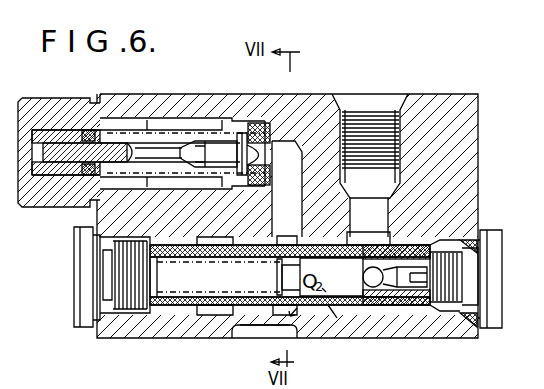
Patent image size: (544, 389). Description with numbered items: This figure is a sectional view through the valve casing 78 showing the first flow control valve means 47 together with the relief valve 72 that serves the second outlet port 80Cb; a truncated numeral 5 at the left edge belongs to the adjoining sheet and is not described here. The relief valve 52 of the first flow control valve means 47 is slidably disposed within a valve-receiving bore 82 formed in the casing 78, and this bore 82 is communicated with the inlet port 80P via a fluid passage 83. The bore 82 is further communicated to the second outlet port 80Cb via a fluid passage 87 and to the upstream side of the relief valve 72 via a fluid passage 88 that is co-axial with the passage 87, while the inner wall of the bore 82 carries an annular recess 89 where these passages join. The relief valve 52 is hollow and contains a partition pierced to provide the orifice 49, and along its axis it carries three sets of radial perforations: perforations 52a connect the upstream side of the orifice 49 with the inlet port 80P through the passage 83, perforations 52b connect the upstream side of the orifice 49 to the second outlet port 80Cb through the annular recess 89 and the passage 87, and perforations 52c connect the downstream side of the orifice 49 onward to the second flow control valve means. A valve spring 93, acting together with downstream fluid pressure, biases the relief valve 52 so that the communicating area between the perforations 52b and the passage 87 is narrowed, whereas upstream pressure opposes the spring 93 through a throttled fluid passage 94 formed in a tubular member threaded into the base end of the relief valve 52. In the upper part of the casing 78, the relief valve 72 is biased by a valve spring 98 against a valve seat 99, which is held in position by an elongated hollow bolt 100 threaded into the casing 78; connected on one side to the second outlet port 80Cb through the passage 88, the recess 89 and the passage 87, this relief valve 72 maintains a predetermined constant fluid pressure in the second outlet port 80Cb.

The valve assembly (partial) 5 is at (5, 66).
The first flow control valve means 47 is at (367, 307).
The orifice 49 is at (273, 278).
The relief valve 52 is at (312, 247).
The radial perforations 52a is at (457, 240).
The radial perforations 52b is at (328, 297).
The radial perforations 52c is at (213, 255).
The relief valve 72 is at (220, 150).
The casing 78 is at (447, 148).
The inlet port 80P is at (370, 108).
The second outlet port 80Cb is at (257, 333).
The valve-receiving bore 82 is at (233, 243).
The fluid passage 83 is at (373, 217).
The fluid passage 87 is at (292, 322).
The fluid passage 88 is at (296, 165).
The annular recess 89 is at (333, 315).
The valve spring 93 is at (217, 333).
The throttled fluid passage 94 is at (407, 312).
The valve spring 98 is at (82, 177).
The valve seat 99 is at (257, 127).
The elongated hollow bolt 100 is at (192, 125).